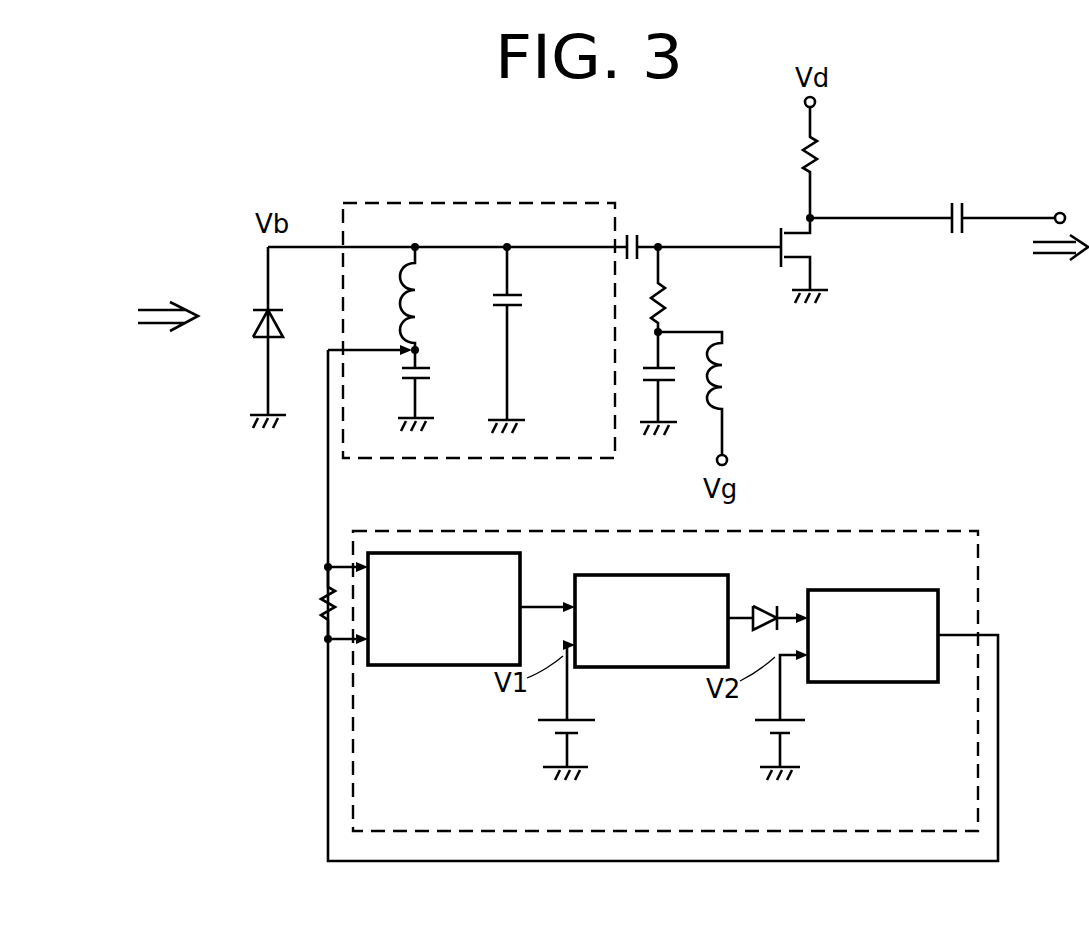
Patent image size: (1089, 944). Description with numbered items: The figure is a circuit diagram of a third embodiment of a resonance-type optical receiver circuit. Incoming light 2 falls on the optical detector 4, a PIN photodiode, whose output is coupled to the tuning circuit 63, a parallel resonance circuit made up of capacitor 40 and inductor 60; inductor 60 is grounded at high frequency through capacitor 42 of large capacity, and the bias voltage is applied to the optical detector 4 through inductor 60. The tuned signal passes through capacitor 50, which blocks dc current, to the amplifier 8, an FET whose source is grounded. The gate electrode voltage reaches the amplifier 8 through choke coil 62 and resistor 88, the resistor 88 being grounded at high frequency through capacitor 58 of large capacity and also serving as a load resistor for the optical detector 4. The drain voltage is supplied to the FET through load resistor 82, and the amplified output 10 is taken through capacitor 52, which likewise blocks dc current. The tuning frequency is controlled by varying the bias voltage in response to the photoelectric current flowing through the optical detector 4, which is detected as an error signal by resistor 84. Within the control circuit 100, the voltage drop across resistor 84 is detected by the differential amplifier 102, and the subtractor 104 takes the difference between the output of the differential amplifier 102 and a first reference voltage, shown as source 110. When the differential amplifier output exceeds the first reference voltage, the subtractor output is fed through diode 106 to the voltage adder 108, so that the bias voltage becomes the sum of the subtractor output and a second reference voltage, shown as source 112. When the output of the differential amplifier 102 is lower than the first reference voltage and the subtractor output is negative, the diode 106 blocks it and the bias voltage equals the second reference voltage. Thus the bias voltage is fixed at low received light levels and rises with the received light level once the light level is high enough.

The input signal 2 is at (153, 306).
The optical detector 4 is at (250, 335).
The tuning circuit 63 is at (427, 200).
The capacitor 50 is at (636, 230).
The inductor 60 is at (418, 306).
The capacitor 40 is at (524, 303).
The capacitor 42 is at (433, 373).
The resistor 88 is at (668, 301).
The capacitor 58 is at (641, 372).
The choke coil 62 is at (735, 374).
The load resistor 82 is at (797, 155).
The amplifier 8 is at (812, 252).
The capacitor 52 is at (955, 198).
The output signal 10 is at (1056, 258).
The control circuit 100 is at (803, 524).
The resistor 84 is at (313, 608).
The differential amplifier 102 is at (395, 668).
The subtractor 104 is at (654, 669).
The diode 106 is at (696, 575).
The voltage adder 108 is at (921, 590).
The reference voltage source 110 is at (553, 730).
The reference voltage source 112 is at (800, 733).